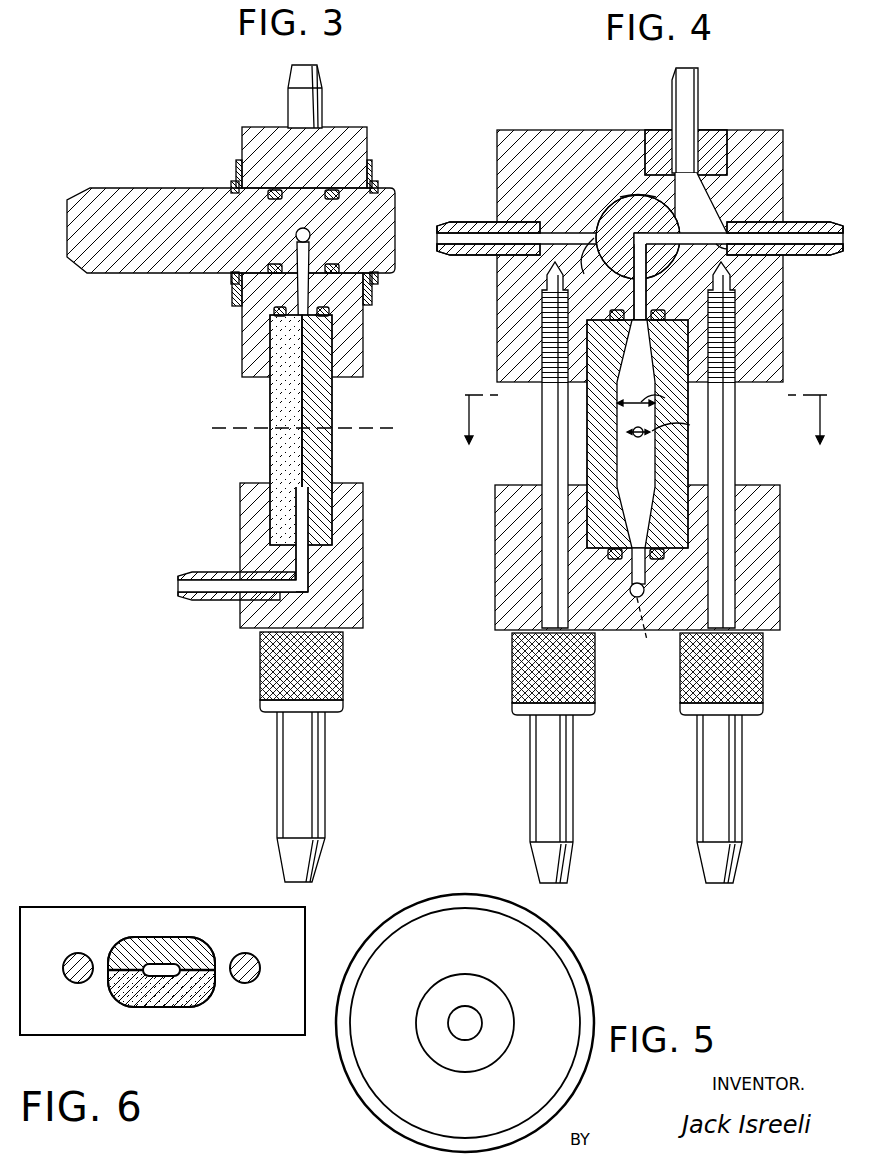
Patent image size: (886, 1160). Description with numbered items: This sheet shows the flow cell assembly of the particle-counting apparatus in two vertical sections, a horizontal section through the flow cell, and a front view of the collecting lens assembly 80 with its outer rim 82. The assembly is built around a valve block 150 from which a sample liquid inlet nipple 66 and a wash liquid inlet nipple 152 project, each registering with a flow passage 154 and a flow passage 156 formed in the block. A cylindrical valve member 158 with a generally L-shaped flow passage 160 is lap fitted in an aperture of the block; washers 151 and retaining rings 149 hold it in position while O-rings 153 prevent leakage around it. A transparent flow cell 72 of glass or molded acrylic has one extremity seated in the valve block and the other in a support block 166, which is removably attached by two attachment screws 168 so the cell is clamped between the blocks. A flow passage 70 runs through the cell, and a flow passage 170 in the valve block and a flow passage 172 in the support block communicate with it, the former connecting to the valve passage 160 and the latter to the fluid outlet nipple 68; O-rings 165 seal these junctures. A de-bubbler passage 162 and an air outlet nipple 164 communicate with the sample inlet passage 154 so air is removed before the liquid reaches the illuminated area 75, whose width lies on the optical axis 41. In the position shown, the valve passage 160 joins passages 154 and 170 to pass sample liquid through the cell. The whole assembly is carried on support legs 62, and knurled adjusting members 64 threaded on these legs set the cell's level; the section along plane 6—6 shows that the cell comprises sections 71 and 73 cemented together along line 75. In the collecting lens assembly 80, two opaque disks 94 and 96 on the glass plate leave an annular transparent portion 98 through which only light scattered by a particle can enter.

In FIG. 3, the optical axis 41 is at (236, 429).
In FIG. 3, the support legs 62 is at (291, 758).
In FIG. 4, the support legs 62 is at (540, 765).
In FIG. 3, the knurled adjusting members 64 is at (344, 665).
In FIG. 4, the knurled adjusting members 64 is at (580, 678).
In FIG. 4, the sample liquid inlet nipple 66 is at (821, 229).
In FIG. 3, the fluid outlet nipple 68 is at (222, 599).
In FIG. 4, the fluid outlet nipple 68 is at (629, 630).
In FIG. 3, the flow passage 70 is at (300, 343).
In FIG. 4, the flow passage 70 is at (641, 357).
In FIG. 6, the flow passage 70 is at (163, 955).
In FIG. 3, the flow cell section 71 is at (322, 451).
In FIG. 6, the flow cell section 71 is at (140, 948).
In FIG. 3, the transparent flow cell 72 is at (334, 413).
In FIG. 6, the transparent flow cell 72 is at (200, 935).
In FIG. 3, the flow cell section 73 is at (278, 409).
In FIG. 6, the flow cell section 73 is at (139, 985).
In FIG. 4, the illuminated area / line of surface contact 75 is at (634, 437).
In FIG. 6, the illuminated area / line of surface contact 75 is at (201, 963).
In FIG. 5, the collecting lens assembly 80 is at (339, 1054).
In FIG. 5, the outer rim 82 is at (548, 934).
In FIG. 5, the disk 94 is at (469, 1027).
In FIG. 5, the disk 96 is at (562, 966).
In FIG. 5, the annular transparent portion 98 is at (482, 994).
In FIG. 3, the retaining rings 149 is at (377, 188).
In FIG. 3, the valve block 150 is at (366, 140).
In FIG. 4, the valve block 150 is at (784, 150).
In FIG. 3, the washers 151 is at (237, 168).
In FIG. 4, the wash liquid inlet nipple 152 is at (490, 253).
In FIG. 3, the O-rings 153 is at (273, 200).
In FIG. 4, the sample liquid inlet passage 154 is at (738, 253).
In FIG. 4, the wash liquid flow passage 156 is at (595, 266).
In FIG. 3, the cylindrical valve member 158 is at (166, 198).
In FIG. 4, the cylindrical valve member 158 is at (637, 195).
In FIG. 3, the L-shaped flow passage 160 is at (308, 234).
In FIG. 4, the L-shaped flow passage 160 is at (612, 217).
In FIG. 4, the de-bubbler passage 162 is at (713, 209).
In FIG. 3, the air outlet nipple 164 is at (310, 99).
In FIG. 4, the air outlet nipple 164 is at (700, 101).
In FIG. 3, the O-rings 165 is at (326, 313).
In FIG. 3, the support block 166 is at (348, 512).
In FIG. 4, the support block 166 is at (770, 532).
In FIG. 6, the support block 166 is at (50, 915).
In FIG. 4, the attachment screws 168 is at (546, 457).
In FIG. 6, the attachment screws 168 is at (88, 984).
In FIG. 4, the flow passage 170 is at (646, 312).
In FIG. 3, the flow passage 172 is at (306, 581).
In FIG. 4, the flow passage 172 is at (646, 571).
In FIG. 4, the section line 6- 6 is at (644, 425).